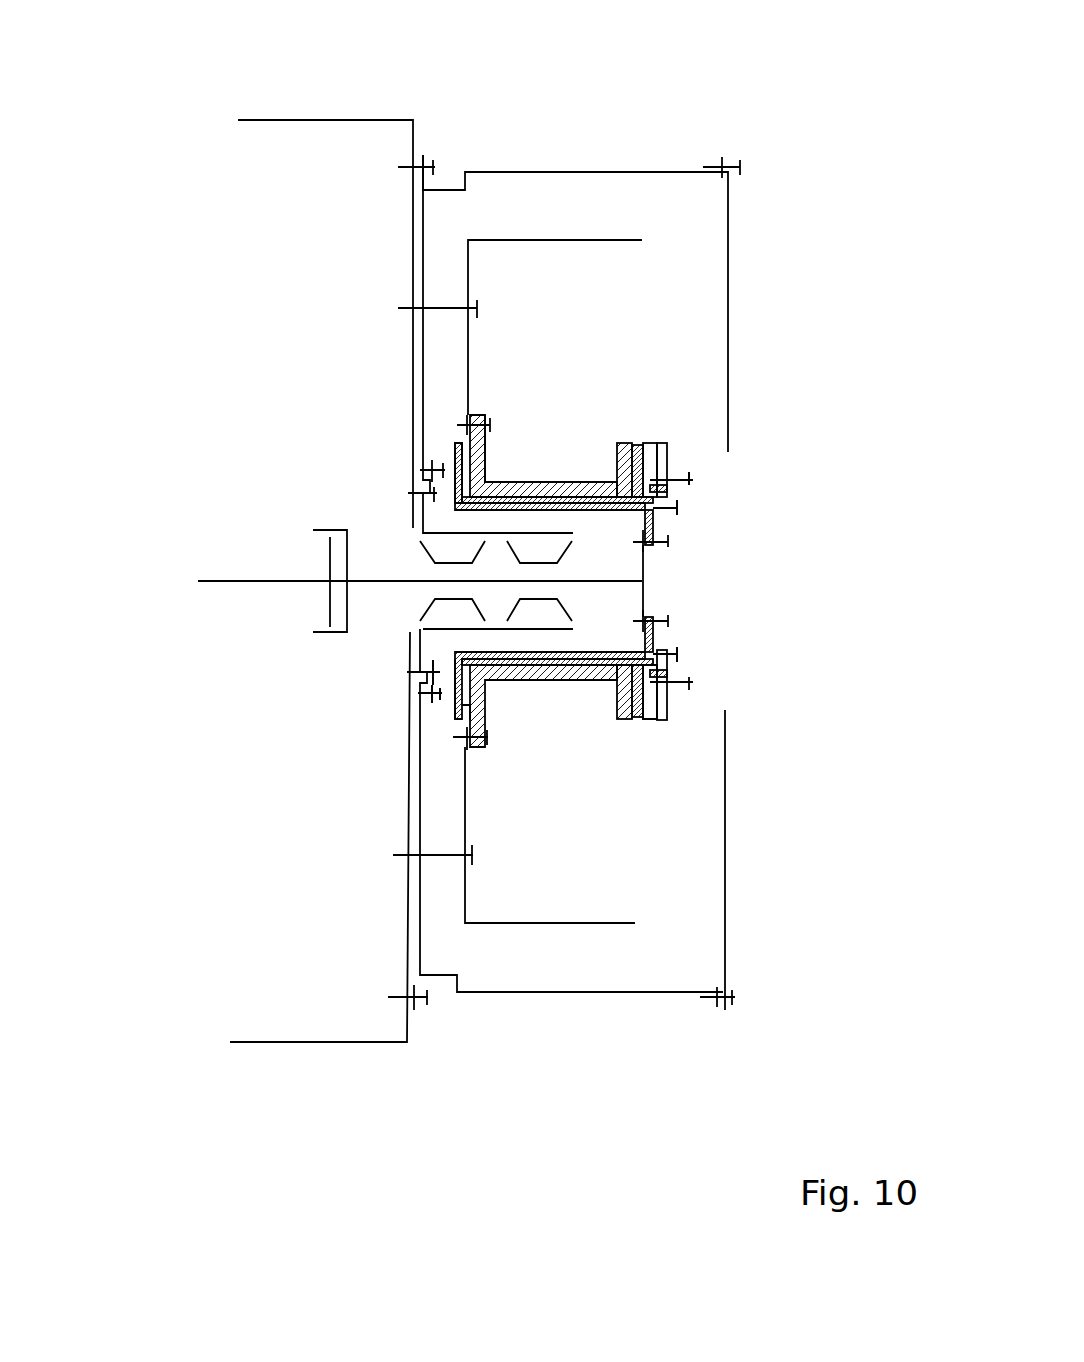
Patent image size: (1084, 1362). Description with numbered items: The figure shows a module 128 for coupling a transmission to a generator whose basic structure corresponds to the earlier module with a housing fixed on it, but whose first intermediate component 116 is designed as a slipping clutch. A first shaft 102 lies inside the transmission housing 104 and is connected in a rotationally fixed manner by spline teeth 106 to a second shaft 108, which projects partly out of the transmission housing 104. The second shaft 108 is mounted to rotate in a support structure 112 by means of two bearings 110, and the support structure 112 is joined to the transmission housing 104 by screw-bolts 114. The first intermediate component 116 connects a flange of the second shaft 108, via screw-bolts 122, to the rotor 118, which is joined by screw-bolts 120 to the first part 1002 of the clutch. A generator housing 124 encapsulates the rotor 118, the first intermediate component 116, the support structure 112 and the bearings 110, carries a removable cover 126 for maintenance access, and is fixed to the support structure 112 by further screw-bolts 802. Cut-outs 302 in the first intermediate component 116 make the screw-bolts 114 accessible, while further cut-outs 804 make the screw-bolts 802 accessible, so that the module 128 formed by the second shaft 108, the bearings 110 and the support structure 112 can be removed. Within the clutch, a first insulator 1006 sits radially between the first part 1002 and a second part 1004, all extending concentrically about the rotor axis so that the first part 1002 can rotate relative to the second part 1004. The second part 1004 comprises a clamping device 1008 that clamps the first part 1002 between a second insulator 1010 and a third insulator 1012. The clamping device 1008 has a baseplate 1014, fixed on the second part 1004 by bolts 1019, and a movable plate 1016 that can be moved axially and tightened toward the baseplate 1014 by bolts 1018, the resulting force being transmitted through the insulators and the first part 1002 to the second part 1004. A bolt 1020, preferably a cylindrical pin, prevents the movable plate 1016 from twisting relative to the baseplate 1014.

The first shaft 102 is at (263, 580).
The transmission housing 104 is at (318, 118).
The spline teeth 106 is at (317, 632).
The second shaft 108 is at (450, 670).
The bearings 110 is at (537, 550).
The support structure 112 is at (583, 680).
The screw-bolts 114 is at (452, 693).
The first intermediate component 116 is at (583, 482).
The rotor 118 is at (525, 240).
The screw-bolts 120 is at (558, 467).
The screw-bolts 122 is at (668, 542).
The generator housing 124 is at (502, 172).
The removable cover 126 is at (725, 860).
The module 128 is at (572, 690).
The cut-outs 302 is at (425, 673).
The screw-bolts 802 is at (455, 703).
The cut-outs 804 is at (452, 712).
The first part 1002 is at (647, 458).
The second part 1004 is at (452, 508).
The first insulator 1006 is at (597, 503).
The clamping device 1008 is at (677, 727).
The second insulator 1010 is at (452, 453).
The third insulator 1012 is at (692, 475).
The baseplate 1014 is at (657, 663).
The movable plate 1016 is at (667, 707).
The bolts 1018 is at (667, 490).
The bolts 1019 is at (677, 653).
The bolt 1020 is at (680, 508).